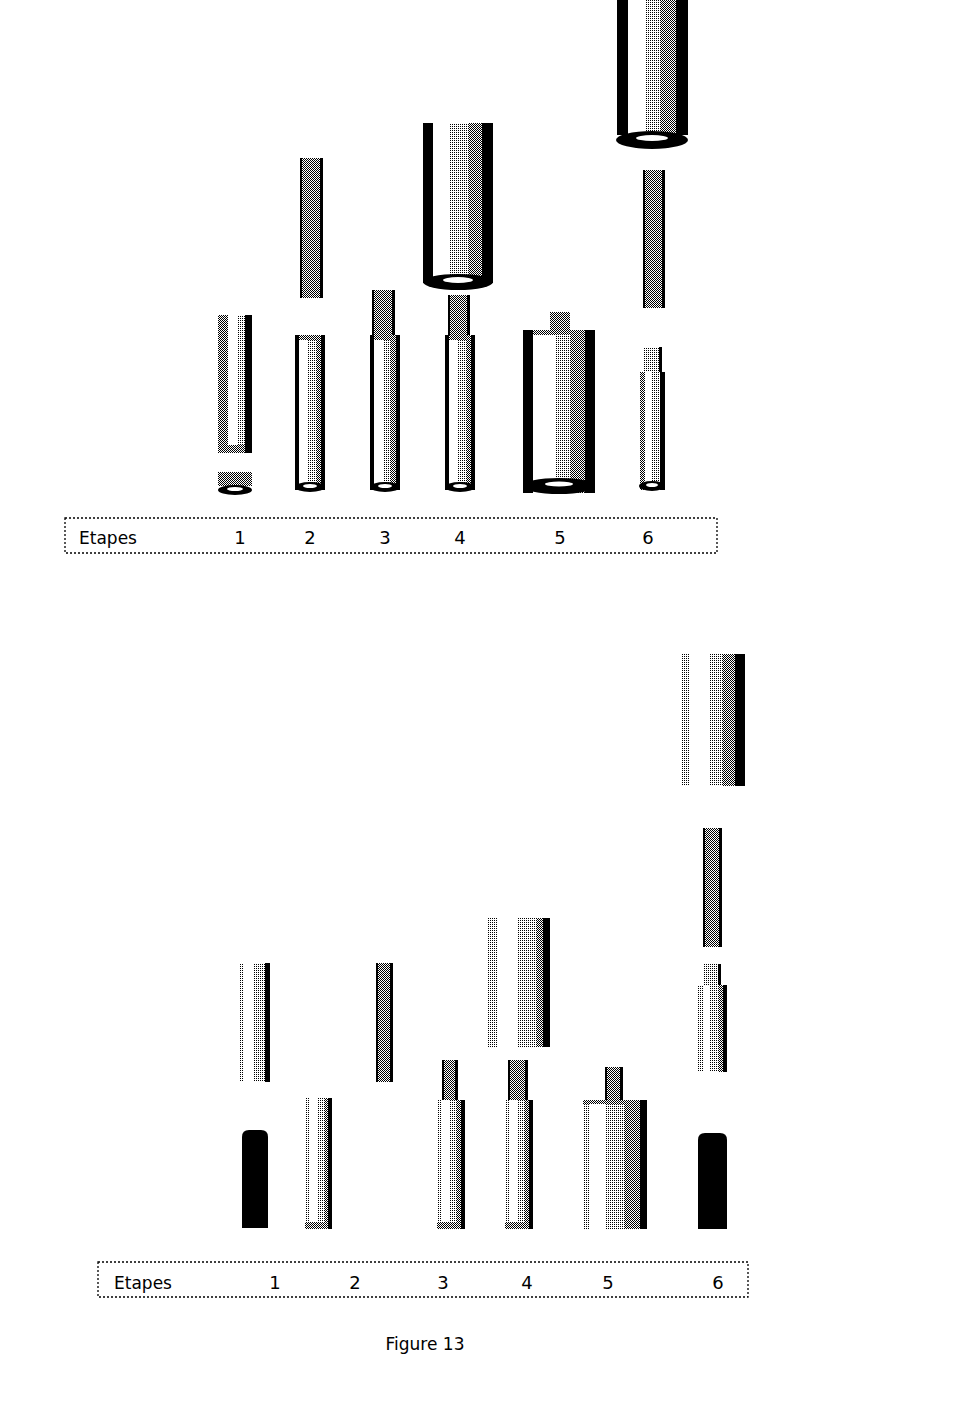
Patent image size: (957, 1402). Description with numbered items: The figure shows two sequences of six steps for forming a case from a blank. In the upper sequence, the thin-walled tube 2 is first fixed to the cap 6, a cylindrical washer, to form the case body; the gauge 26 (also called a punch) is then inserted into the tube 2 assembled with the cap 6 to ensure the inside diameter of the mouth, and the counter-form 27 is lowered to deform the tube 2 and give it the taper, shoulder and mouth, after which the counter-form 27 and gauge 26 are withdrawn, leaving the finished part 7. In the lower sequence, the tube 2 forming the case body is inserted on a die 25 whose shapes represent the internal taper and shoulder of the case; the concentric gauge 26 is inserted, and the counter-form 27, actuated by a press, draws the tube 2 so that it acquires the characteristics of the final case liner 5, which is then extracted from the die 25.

The thin-walled tube 2 is at (217, 363).
The case liner 5 is at (701, 992).
The cap 6 is at (217, 478).
The sleeve 7 is at (668, 368).
The die 25 is at (232, 1163).
The gauge 26 is at (292, 185).
The counter-form 27 is at (442, 142).